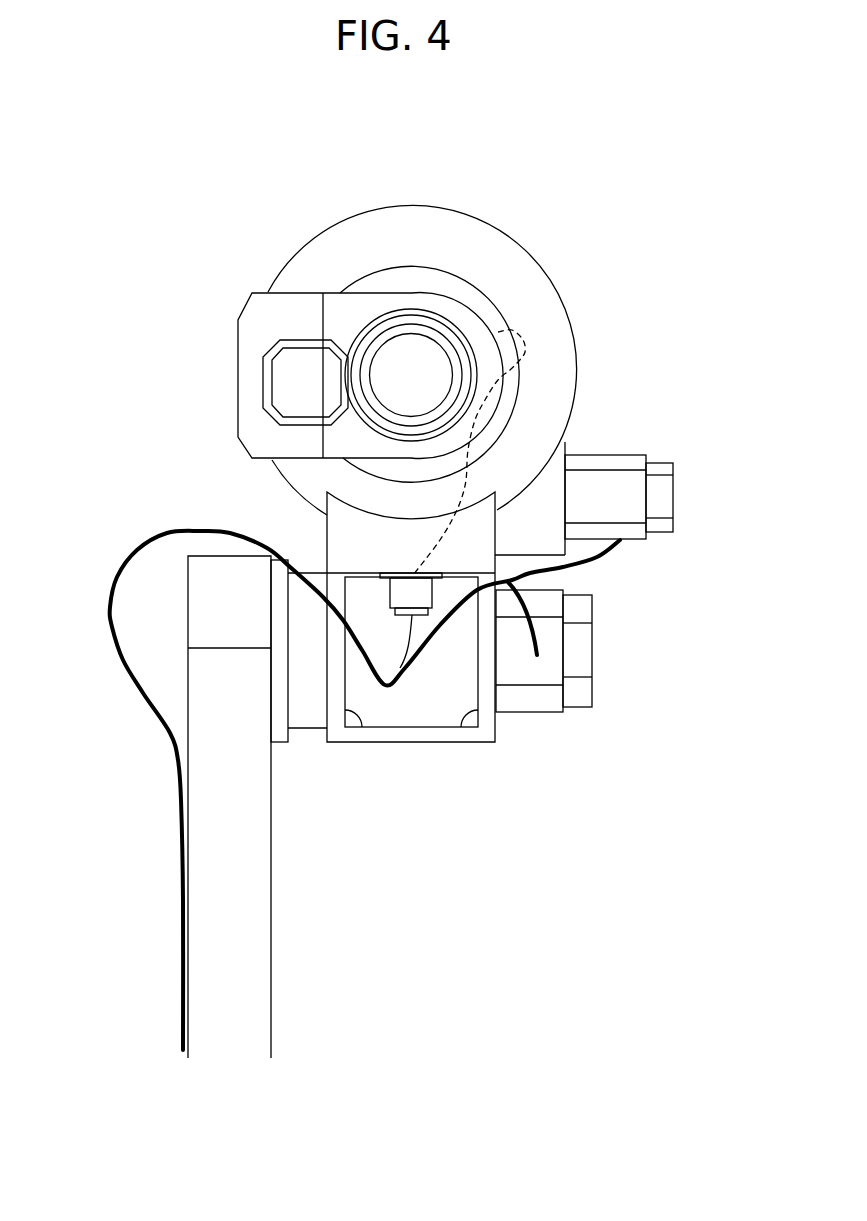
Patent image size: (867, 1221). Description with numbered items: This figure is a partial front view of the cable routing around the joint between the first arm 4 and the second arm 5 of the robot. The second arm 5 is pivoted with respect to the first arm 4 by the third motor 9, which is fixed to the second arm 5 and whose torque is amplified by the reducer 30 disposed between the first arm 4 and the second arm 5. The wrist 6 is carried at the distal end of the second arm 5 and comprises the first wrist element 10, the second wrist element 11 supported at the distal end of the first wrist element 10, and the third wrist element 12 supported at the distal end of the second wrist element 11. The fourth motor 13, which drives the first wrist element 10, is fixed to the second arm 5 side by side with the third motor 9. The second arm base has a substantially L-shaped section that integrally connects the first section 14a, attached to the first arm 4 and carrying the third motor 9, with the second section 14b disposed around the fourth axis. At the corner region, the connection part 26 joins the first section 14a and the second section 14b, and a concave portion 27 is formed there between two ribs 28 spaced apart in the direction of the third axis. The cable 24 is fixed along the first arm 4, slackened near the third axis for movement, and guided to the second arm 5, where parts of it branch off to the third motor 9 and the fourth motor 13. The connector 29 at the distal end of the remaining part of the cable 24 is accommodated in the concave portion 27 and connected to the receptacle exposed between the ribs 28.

The first arm 4 is at (302, 985).
The second arm 5 is at (601, 423).
The wrist 6 is at (312, 258).
The third motor 9 is at (533, 713).
The first wrist element 10 is at (522, 380).
The second wrist element 11 is at (378, 293).
The third wrist element 12 is at (412, 333).
The fourth motor 13 is at (630, 454).
The first section 14a is at (432, 742).
The second section 14b is at (515, 245).
The cable 24 is at (130, 682).
The connection part 26 is at (398, 760).
The concave portion 27 is at (372, 581).
The ribs 28 is at (363, 727).
The connector 29 is at (456, 580).
The reducer 30 is at (303, 728).